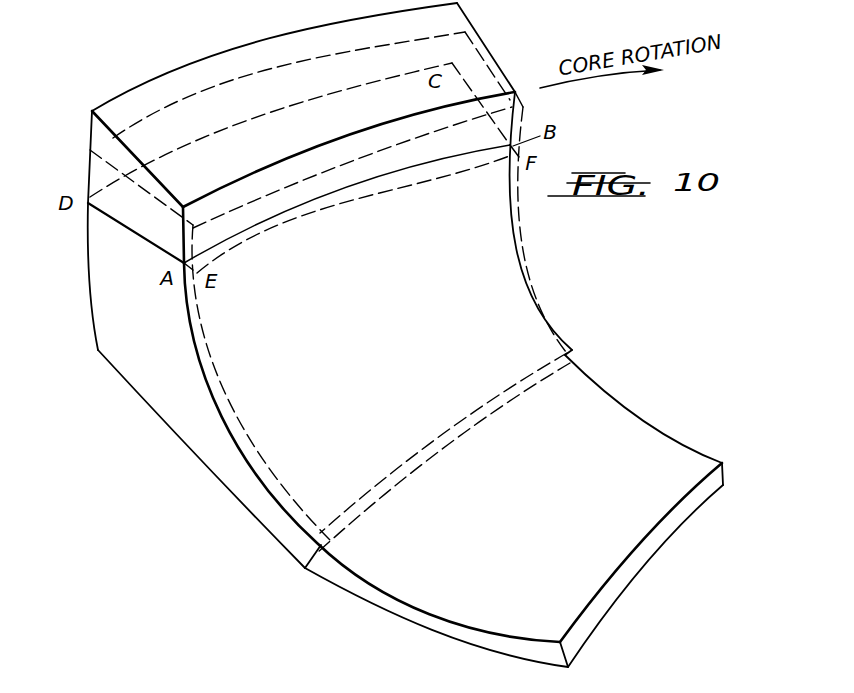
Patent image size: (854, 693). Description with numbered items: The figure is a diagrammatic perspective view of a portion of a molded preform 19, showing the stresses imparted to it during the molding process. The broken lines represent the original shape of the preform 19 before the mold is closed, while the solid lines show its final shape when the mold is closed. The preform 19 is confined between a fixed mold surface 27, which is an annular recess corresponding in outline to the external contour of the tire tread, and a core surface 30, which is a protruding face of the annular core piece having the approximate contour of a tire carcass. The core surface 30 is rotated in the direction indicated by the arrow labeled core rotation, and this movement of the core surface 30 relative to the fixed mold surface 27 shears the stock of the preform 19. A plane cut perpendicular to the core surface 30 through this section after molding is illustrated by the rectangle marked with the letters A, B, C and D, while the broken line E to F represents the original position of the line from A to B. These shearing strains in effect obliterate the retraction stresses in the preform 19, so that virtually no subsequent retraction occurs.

The preform 19 is at (178, 415).
The mold surface 27 is at (88, 297).
The core surface 30 is at (515, 242).